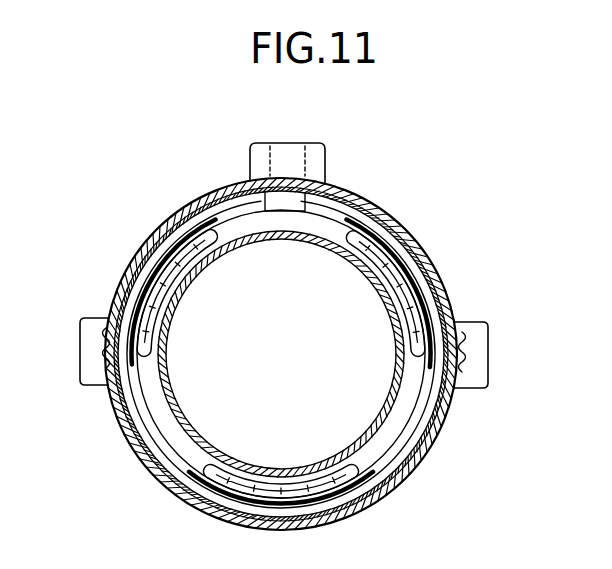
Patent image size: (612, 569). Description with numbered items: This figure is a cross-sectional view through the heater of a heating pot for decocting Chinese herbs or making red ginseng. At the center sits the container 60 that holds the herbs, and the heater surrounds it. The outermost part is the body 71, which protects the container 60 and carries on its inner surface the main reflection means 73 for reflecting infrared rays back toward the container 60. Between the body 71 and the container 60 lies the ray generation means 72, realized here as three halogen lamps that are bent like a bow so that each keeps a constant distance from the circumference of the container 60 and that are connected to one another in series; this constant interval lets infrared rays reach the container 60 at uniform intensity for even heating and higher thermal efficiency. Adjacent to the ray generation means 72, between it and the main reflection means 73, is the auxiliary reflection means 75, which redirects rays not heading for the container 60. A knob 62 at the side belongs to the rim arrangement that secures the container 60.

The container 60 is at (405, 395).
The knob 62 is at (95, 367).
The body 71 is at (397, 486).
The ray generation means 72 is at (428, 303).
The main reflection means 73 is at (433, 443).
The auxiliary reflection means 75 is at (404, 249).